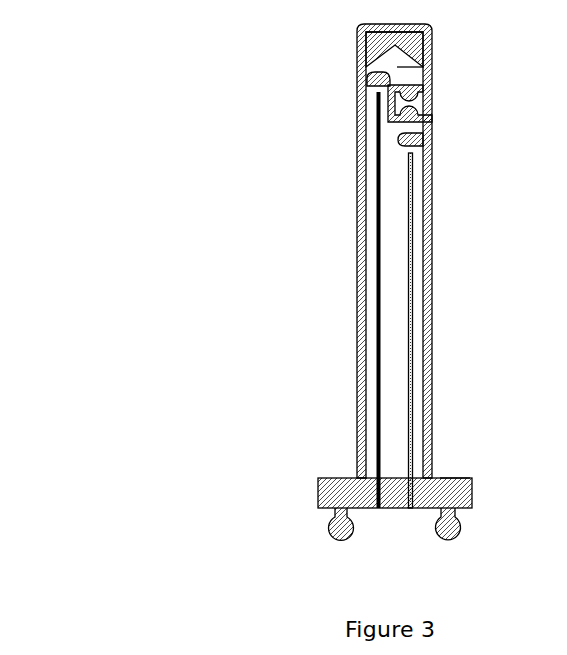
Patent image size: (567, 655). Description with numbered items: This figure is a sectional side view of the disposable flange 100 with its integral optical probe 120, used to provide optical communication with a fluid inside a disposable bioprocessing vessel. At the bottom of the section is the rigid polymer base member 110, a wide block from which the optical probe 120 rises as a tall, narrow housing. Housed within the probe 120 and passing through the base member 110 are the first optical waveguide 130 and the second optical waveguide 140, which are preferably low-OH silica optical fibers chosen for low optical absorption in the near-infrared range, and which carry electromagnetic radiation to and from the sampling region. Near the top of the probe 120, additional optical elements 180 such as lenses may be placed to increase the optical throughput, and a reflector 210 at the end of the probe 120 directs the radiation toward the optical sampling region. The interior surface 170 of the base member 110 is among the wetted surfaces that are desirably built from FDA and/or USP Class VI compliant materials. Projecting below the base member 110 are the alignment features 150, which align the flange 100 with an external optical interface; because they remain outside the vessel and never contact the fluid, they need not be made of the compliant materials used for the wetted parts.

The disposable flange 100 is at (154, 271).
The rigid polymer base member 110 is at (318, 490).
The optical probe 120 is at (358, 223).
The first optical waveguide 130 is at (377, 360).
The second optical waveguide 140 is at (410, 253).
The alignment features 150 is at (328, 528).
The interior surface 170 is at (453, 478).
The additional optical elements 180 is at (400, 140).
The reflector 210 is at (405, 60).